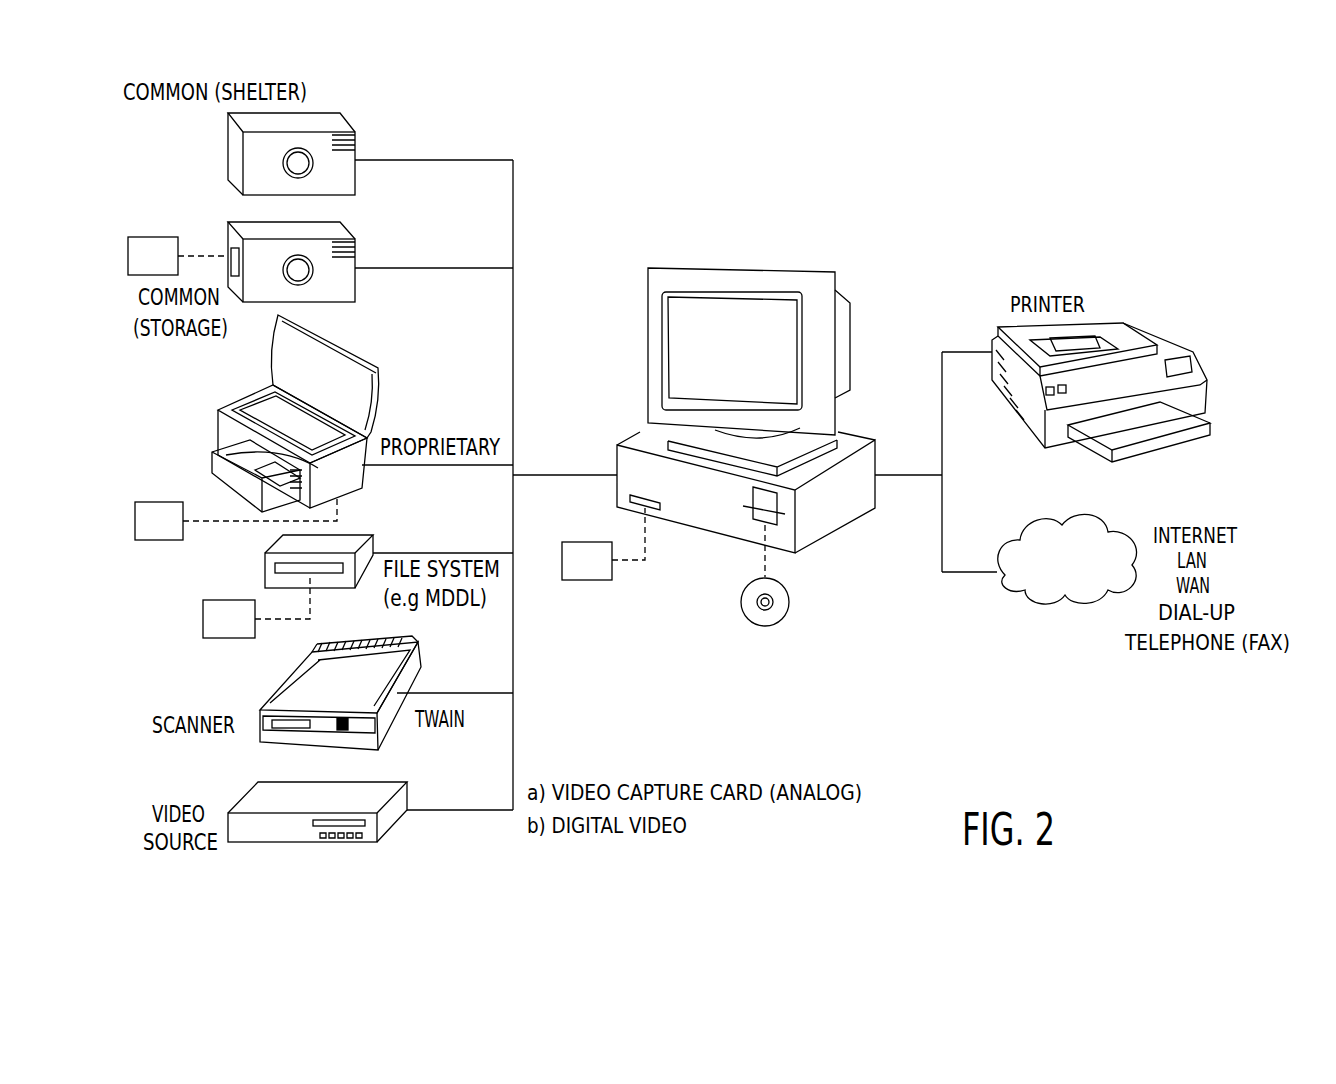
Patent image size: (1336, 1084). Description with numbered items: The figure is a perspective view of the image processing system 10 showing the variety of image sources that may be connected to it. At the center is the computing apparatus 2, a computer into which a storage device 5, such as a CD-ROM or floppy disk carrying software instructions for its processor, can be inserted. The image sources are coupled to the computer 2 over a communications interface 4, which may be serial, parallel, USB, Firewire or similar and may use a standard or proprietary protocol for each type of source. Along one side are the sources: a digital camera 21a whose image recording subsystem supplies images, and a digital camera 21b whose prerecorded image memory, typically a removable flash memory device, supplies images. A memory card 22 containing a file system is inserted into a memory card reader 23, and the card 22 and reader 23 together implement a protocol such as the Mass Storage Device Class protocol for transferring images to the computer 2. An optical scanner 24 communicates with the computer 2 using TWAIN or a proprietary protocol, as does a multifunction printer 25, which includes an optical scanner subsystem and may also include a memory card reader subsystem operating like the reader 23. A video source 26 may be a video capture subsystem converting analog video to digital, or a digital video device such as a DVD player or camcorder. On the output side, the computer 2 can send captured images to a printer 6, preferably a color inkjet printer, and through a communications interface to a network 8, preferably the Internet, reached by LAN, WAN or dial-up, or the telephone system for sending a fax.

The computing apparatus 2 is at (640, 482).
The communications interface 4 is at (563, 475).
The storage device 5 is at (782, 617).
The printer 6 is at (1203, 368).
The network 8 is at (1076, 590).
The image processing system 10 is at (730, 222).
The digital camera 21a is at (355, 178).
The digital camera 21b is at (355, 285).
The memory card 22 is at (166, 268).
The memory card reader 23 is at (265, 573).
The optical scanner 24 is at (393, 727).
The multifunction printer 25 is at (235, 397).
The video source 26 is at (240, 797).